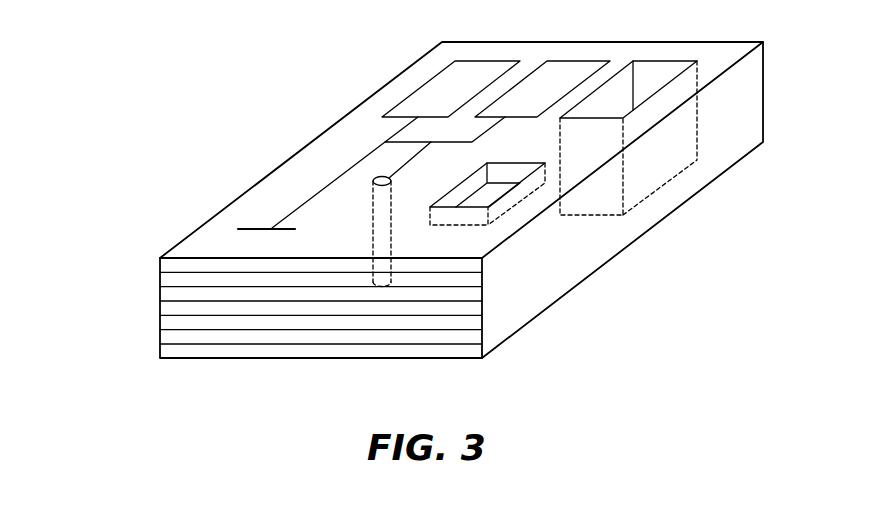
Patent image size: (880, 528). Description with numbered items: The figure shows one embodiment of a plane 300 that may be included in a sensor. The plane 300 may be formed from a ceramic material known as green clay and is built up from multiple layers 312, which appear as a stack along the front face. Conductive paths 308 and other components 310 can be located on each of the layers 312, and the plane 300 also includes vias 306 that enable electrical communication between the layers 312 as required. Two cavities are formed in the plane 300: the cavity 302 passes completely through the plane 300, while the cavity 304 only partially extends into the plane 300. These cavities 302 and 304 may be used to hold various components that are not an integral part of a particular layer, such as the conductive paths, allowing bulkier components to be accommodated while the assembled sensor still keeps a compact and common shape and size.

The plane 300 is at (728, 202).
The cavity 302 is at (660, 68).
The cavity 304 is at (502, 200).
The via 306 is at (380, 177).
The conductive path 308 is at (330, 181).
The other components 310 is at (421, 87).
The layers 312 is at (147, 258).